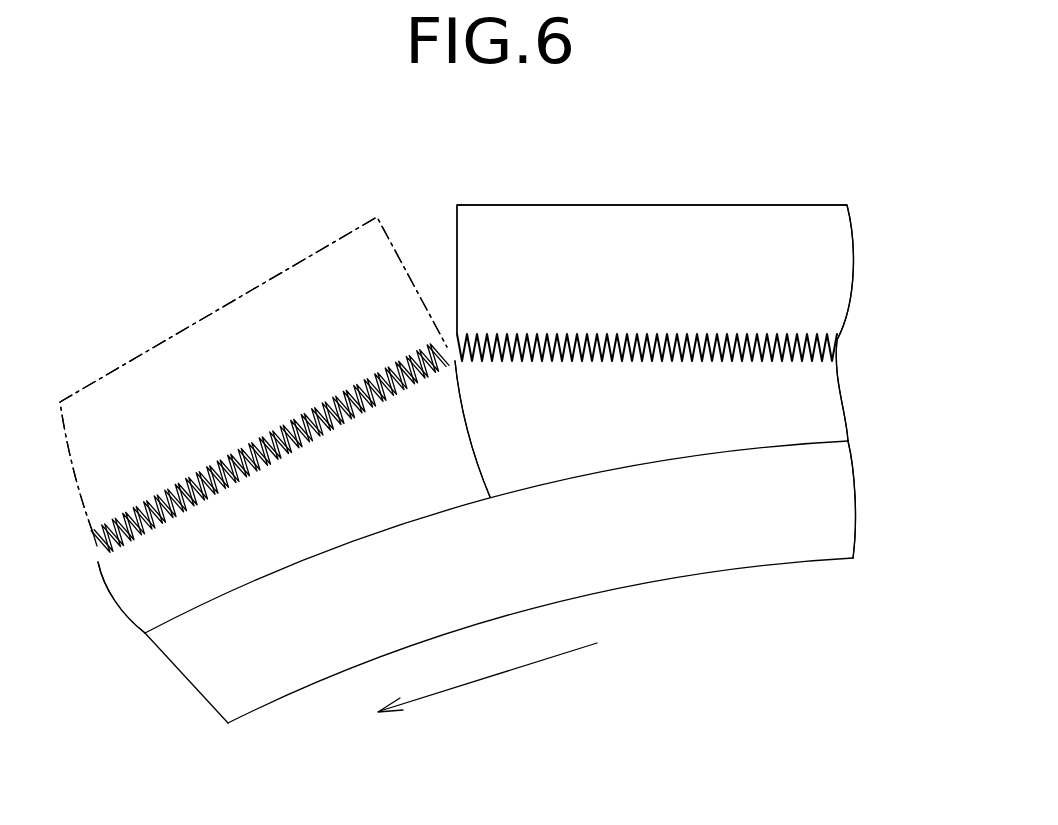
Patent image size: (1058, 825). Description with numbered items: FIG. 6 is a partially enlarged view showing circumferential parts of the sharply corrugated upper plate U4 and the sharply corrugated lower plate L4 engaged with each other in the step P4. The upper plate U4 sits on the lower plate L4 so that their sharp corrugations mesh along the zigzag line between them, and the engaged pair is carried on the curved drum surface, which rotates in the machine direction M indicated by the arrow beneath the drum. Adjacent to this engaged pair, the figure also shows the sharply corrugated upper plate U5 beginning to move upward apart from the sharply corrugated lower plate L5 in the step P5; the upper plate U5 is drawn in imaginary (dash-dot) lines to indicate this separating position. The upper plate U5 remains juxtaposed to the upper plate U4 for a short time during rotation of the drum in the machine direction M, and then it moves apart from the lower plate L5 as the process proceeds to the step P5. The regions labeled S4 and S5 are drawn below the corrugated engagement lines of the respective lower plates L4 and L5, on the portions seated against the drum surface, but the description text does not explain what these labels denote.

The step P4 is at (701, 321).
The step P5 is at (244, 456).
The sharply corrugated upper plate U4 is at (830, 265).
The sharply corrugated upper plate U5 is at (163, 367).
The sharply corrugated lower plate L4 is at (818, 353).
The sharply corrugated lower plate L5 is at (137, 552).
The lower sheet portion of panel P4 S4 is at (798, 410).
The lower sheet portion of panel P5 S5 is at (165, 587).
The machine direction M is at (517, 665).